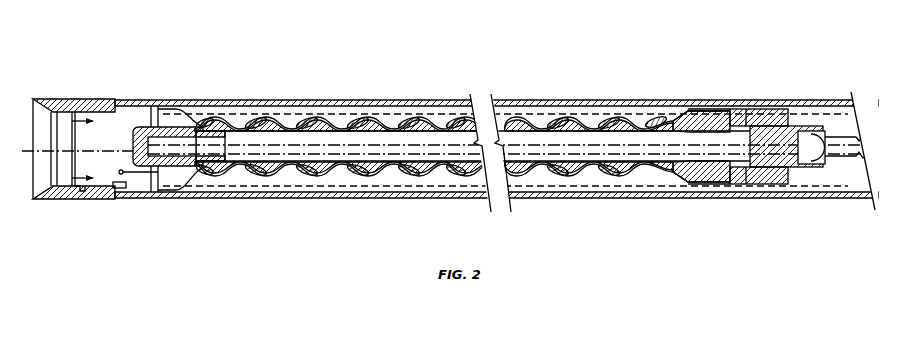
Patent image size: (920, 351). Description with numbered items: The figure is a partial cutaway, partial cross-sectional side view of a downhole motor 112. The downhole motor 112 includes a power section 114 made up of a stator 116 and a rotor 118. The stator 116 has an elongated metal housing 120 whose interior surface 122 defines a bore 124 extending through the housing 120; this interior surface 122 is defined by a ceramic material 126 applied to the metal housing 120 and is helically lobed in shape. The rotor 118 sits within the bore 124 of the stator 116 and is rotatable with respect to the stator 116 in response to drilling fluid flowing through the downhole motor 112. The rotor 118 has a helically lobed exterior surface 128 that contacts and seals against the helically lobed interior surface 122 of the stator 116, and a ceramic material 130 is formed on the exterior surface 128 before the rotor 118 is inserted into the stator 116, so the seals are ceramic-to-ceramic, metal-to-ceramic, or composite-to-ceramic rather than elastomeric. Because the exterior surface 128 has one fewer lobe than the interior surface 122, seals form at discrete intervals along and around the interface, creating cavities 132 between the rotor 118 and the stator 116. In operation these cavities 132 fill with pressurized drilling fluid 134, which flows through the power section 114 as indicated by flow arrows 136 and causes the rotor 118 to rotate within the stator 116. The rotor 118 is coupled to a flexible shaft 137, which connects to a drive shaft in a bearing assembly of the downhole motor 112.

The downhole motor 112 is at (452, 36).
The power section 114 is at (364, 94).
The stator 116 is at (205, 195).
The rotor 118 is at (417, 116).
The elongated metal housing 120 is at (537, 97).
The interior surface 122 is at (268, 114).
The bore 124 is at (316, 113).
The ceramic material 126 is at (362, 173).
The helically lobed exterior surface 128 is at (549, 172).
The ceramic material 130 is at (247, 174).
The cavities 132 is at (421, 172).
The pressurized drilling fluid 134 is at (100, 143).
The flow arrows 136 is at (75, 112).
The flexible shaft 137 is at (858, 142).